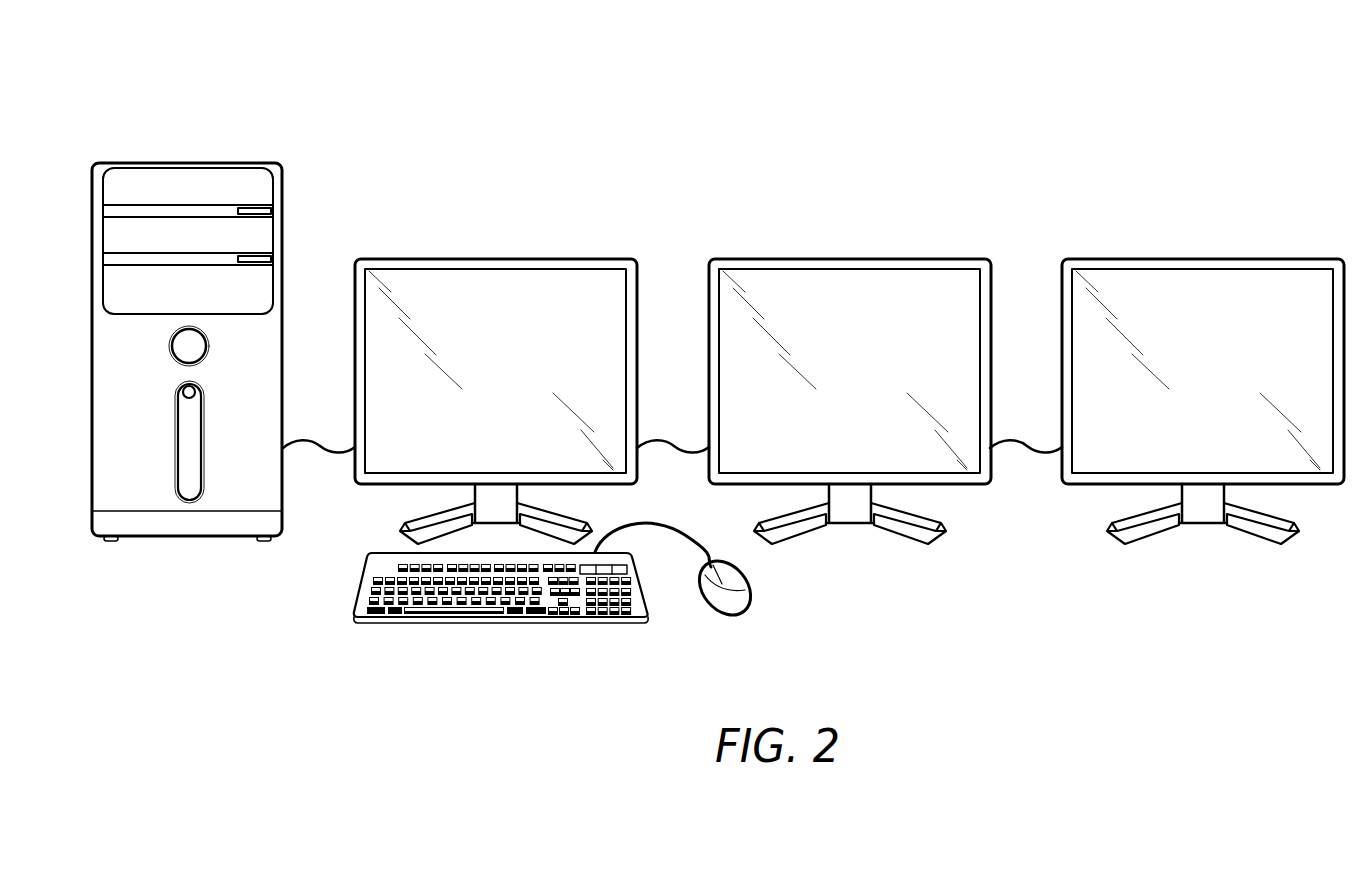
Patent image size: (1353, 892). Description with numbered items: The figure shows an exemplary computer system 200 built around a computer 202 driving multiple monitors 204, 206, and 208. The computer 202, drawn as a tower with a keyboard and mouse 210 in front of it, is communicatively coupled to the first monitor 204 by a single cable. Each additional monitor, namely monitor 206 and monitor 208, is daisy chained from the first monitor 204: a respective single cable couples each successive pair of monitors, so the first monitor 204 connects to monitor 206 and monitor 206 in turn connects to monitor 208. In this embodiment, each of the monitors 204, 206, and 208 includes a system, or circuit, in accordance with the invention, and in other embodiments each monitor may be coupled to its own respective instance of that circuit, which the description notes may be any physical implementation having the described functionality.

The computer system 200 is at (1111, 110).
The computer 202 is at (165, 537).
The first monitor 204 is at (512, 257).
The monitor 206 is at (869, 257).
The monitor 208 is at (1224, 257).
The keyboard and mouse input devices 210 is at (543, 620).